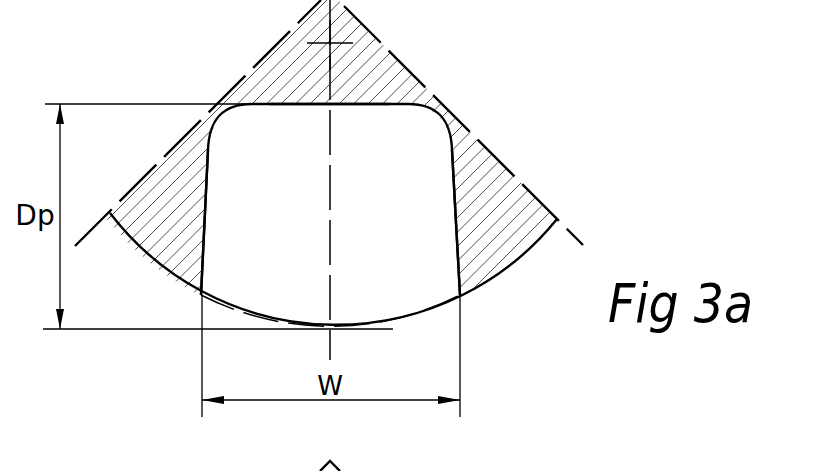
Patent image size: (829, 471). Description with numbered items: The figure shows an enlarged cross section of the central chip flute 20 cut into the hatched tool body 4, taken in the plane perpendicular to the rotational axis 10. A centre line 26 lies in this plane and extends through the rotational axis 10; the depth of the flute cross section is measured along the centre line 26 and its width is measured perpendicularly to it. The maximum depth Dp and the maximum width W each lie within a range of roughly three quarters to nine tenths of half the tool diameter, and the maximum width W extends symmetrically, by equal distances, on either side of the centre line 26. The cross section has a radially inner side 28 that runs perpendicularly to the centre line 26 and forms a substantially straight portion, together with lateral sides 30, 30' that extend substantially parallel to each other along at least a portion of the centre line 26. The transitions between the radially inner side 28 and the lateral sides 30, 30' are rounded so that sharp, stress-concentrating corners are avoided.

The sprocket body 4 is at (510, 193).
The rotational axis 10 is at (331, 44).
The central chip flute 20 is at (353, 288).
The centre line 26 is at (328, 197).
The radially inner side 28 is at (346, 105).
The lateral side 30 is at (240, 222).
The lateral side 30' is at (419, 222).